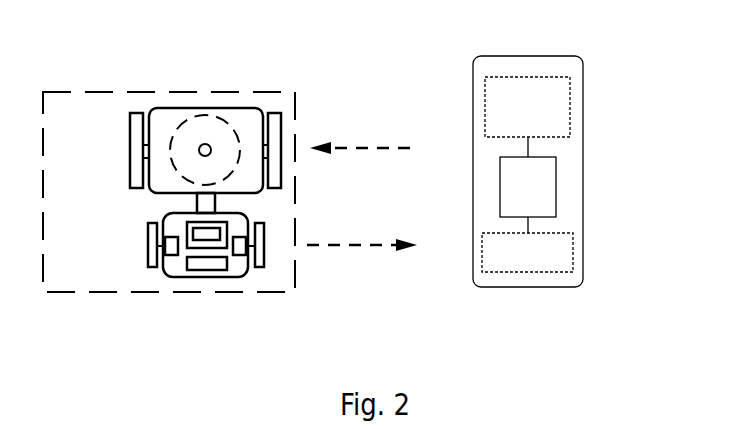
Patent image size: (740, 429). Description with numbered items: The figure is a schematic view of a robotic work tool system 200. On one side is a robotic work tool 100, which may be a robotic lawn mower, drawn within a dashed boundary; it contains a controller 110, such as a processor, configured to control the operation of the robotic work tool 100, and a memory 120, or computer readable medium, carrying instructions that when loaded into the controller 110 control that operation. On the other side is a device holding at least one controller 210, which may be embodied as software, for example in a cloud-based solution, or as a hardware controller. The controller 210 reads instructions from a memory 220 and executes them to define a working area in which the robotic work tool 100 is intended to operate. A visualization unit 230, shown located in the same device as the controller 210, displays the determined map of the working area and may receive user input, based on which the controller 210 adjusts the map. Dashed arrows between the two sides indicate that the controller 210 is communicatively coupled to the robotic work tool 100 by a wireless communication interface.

The robotic work tool system 200 is at (229, 42).
The robotic work tool 100 is at (117, 115).
The controller 110 is at (203, 223).
The memory 120 is at (197, 238).
The controller 210 is at (557, 195).
The memory 220 is at (574, 257).
The visualization unit 230 is at (572, 120).